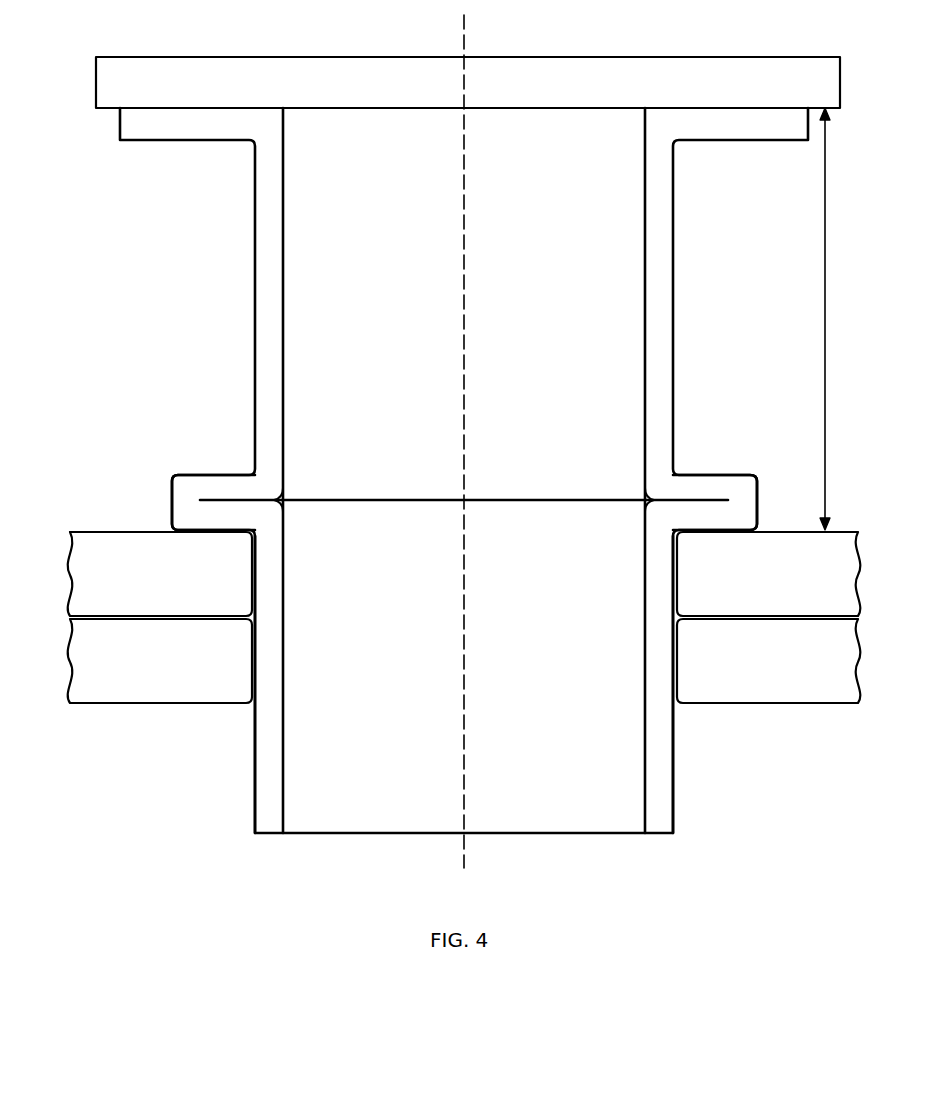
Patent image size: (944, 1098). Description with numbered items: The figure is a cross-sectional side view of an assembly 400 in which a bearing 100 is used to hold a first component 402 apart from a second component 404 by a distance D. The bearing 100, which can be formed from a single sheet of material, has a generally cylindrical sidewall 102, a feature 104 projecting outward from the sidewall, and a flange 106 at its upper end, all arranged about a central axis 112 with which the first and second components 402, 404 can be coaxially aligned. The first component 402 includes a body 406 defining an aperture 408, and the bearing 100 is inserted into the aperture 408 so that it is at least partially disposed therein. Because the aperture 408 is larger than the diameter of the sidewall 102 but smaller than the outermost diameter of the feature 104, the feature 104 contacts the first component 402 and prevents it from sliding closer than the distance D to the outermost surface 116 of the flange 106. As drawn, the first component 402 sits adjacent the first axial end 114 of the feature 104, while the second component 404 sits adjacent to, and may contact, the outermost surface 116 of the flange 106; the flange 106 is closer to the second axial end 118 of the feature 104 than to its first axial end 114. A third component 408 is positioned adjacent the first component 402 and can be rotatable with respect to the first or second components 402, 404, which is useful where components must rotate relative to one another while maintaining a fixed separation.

The bearing 100 is at (464, 428).
The sidewall 102 is at (675, 760).
The feature 104 is at (660, 489).
The flange 106 is at (258, 124).
The central axis 112 is at (465, 20).
The first axial end 114 is at (172, 530).
The outermost surface 116 is at (195, 108).
The second axial end 118 is at (722, 472).
The assembly 400 is at (144, 237).
The first component 402 is at (796, 586).
The second component 404 is at (796, 97).
The body 406 is at (90, 545).
The aperture 408 is at (796, 673).
The distance D is at (824, 265).